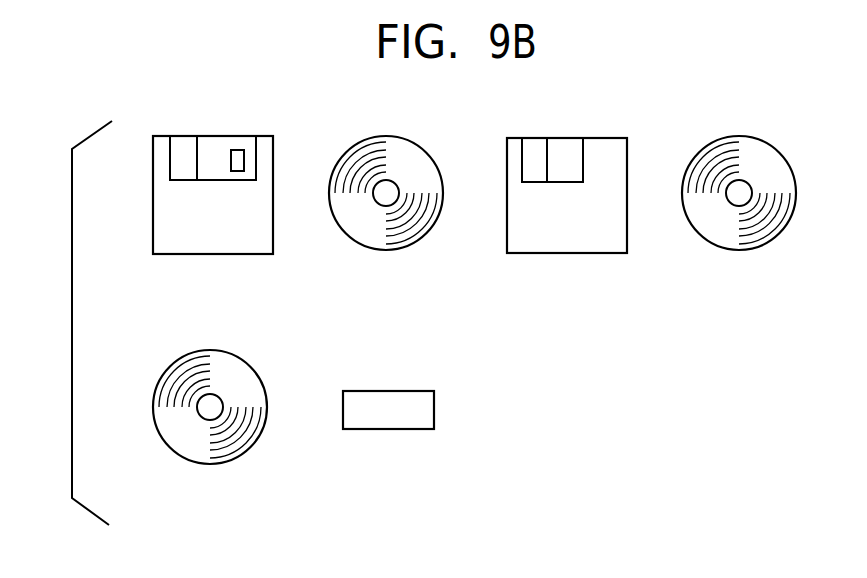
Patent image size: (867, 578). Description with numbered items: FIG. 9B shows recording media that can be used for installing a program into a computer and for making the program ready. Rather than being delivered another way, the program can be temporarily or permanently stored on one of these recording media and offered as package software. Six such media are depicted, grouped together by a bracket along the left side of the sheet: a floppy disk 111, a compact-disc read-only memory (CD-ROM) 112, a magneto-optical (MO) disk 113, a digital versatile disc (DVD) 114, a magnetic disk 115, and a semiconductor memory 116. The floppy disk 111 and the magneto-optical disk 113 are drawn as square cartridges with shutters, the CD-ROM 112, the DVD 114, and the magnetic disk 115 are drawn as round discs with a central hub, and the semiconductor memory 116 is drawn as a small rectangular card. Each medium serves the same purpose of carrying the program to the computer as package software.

The floppy disk 111 is at (216, 254).
The compact-disc read-only memory (CD-ROM) 112 is at (387, 250).
The magneto-optical (MO) disk 113 is at (563, 253).
The digital versatile disc (DVD) 114 is at (743, 250).
The magnetic disk 115 is at (213, 464).
The semiconductor memory 116 is at (393, 429).